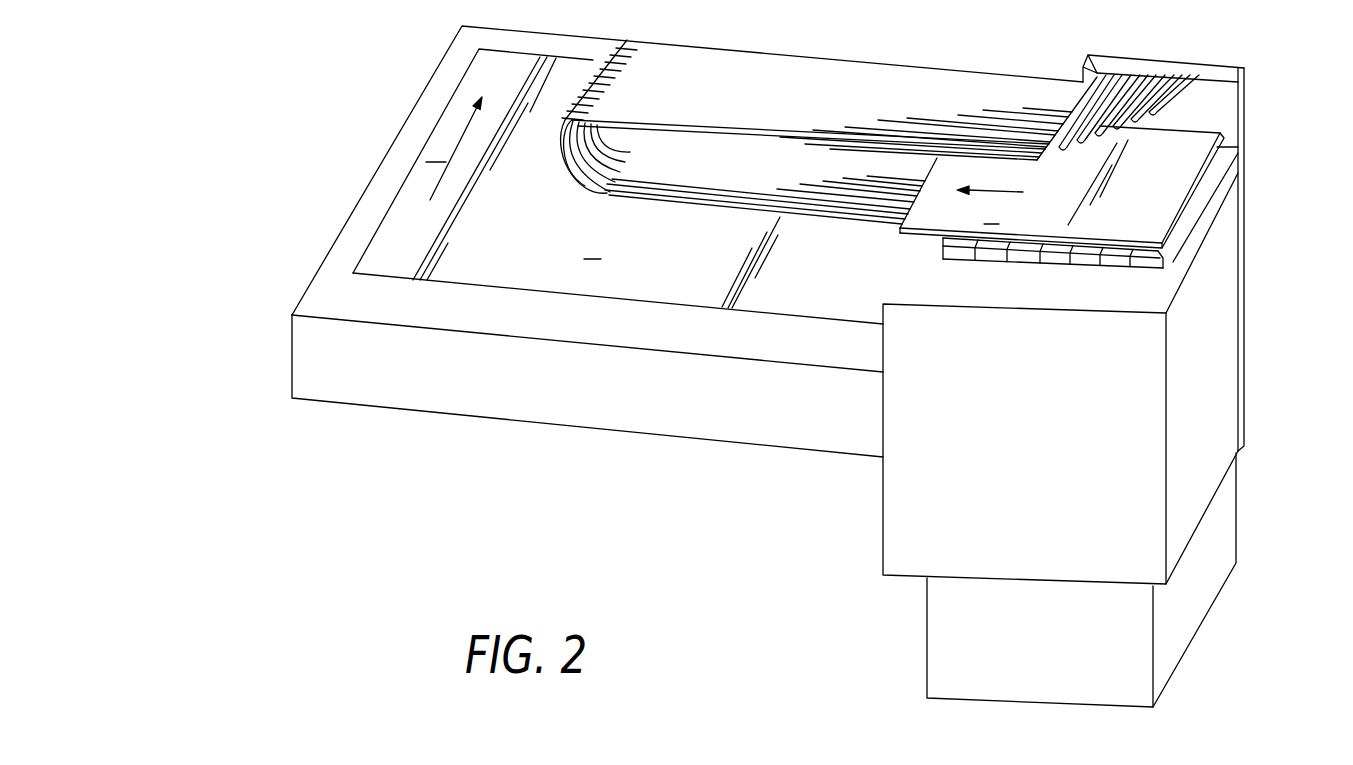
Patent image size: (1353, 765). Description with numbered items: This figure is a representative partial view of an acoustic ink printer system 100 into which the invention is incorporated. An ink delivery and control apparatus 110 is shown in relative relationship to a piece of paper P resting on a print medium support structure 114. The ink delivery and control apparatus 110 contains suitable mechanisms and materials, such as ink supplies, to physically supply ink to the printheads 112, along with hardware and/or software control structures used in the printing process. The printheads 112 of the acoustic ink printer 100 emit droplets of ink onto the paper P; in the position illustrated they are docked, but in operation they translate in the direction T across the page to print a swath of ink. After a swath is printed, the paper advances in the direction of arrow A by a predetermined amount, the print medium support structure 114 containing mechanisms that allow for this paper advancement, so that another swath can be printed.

The system 100 is at (802, 366).
The ink delivery and control apparatus 110 is at (1134, 357).
The printheads 112 is at (1105, 273).
The print medium support structure 114 is at (808, 400).